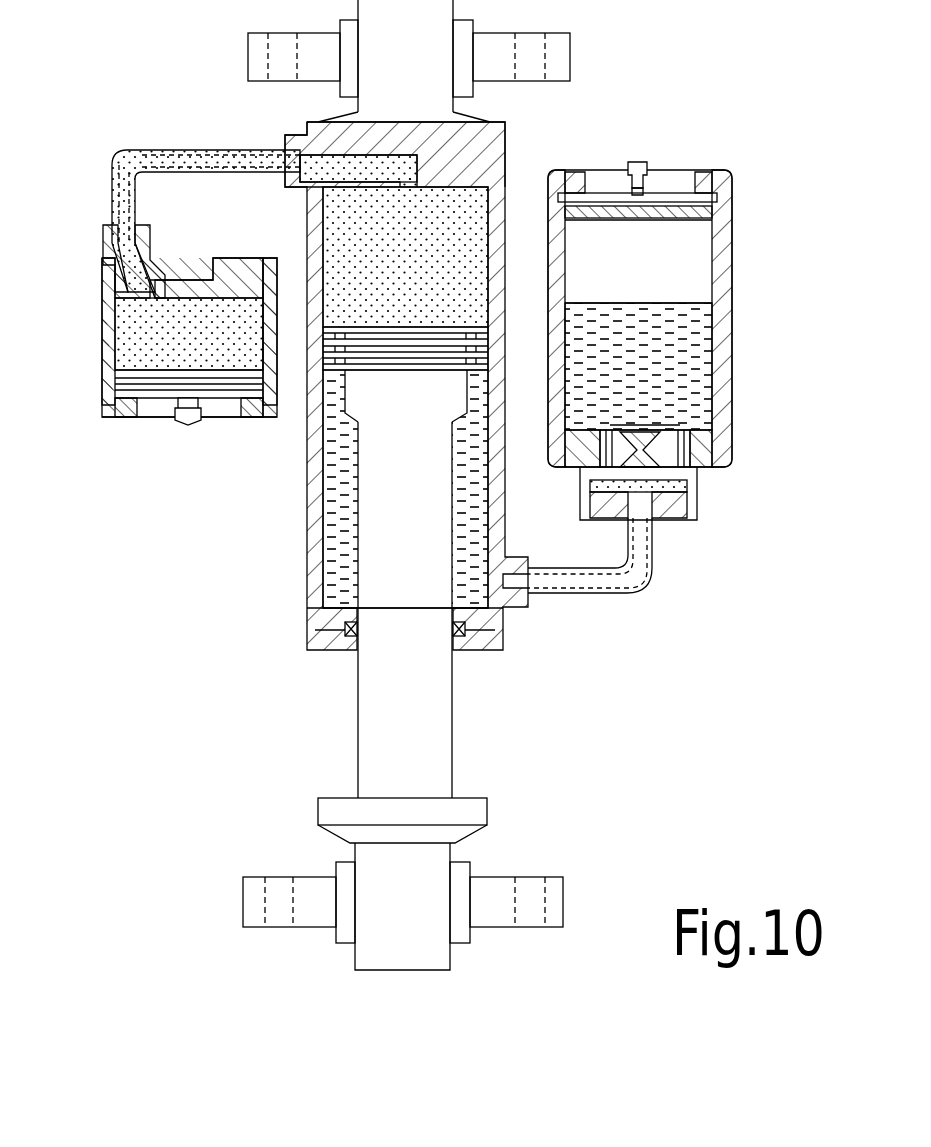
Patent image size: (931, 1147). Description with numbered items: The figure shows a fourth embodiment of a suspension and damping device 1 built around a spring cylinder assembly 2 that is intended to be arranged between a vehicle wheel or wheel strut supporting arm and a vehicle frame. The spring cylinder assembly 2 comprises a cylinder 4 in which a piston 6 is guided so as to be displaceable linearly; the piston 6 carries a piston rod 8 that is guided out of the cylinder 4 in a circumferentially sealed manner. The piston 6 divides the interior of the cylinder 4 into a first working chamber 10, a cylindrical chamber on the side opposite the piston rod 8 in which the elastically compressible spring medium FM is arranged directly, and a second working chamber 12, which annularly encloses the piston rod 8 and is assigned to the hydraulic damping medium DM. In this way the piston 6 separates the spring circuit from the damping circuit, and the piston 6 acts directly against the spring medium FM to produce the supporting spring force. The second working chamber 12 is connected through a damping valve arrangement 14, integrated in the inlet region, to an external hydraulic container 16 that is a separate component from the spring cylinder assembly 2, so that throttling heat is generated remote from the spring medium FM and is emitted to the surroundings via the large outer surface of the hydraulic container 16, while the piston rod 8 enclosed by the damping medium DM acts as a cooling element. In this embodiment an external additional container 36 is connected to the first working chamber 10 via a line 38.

The suspension and damping device 1 is at (248, 673).
The spring cylinder assembly 2 is at (303, 514).
The cylinder 4 is at (312, 480).
The piston 6 is at (383, 327).
The piston rod 8 is at (415, 710).
The first working chamber 10 is at (455, 205).
The second working chamber 12 is at (470, 517).
The damping valve arrangement 14 is at (683, 467).
The hydraulic container 16 is at (725, 275).
The external additional container 36 is at (100, 305).
The line 38 is at (135, 148).
The spring medium FM is at (460, 253).
The damping medium DM is at (690, 353).